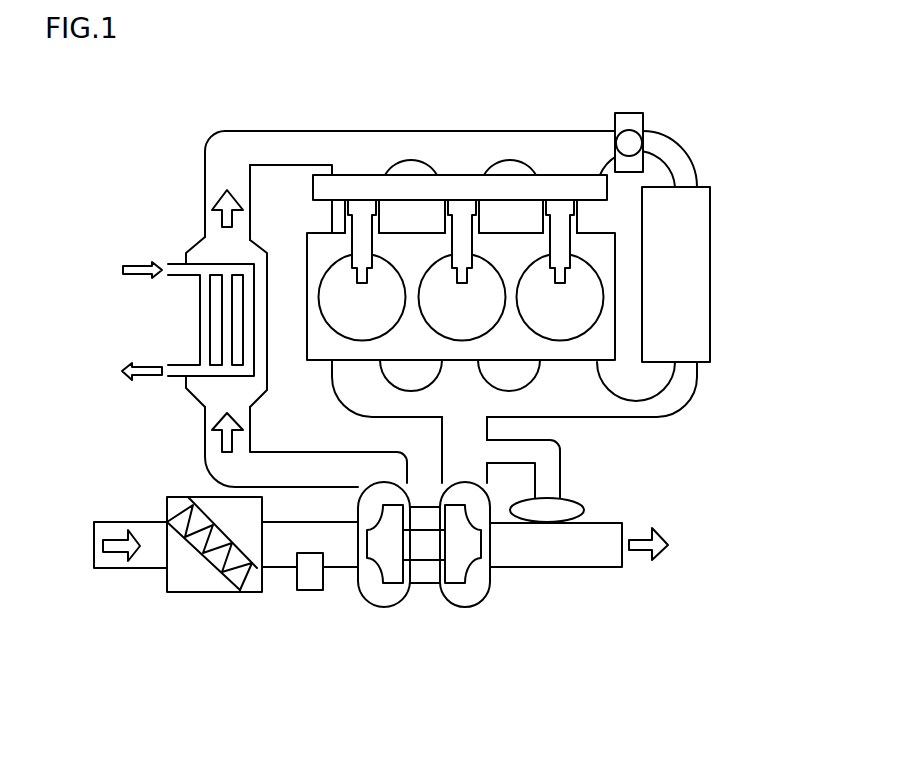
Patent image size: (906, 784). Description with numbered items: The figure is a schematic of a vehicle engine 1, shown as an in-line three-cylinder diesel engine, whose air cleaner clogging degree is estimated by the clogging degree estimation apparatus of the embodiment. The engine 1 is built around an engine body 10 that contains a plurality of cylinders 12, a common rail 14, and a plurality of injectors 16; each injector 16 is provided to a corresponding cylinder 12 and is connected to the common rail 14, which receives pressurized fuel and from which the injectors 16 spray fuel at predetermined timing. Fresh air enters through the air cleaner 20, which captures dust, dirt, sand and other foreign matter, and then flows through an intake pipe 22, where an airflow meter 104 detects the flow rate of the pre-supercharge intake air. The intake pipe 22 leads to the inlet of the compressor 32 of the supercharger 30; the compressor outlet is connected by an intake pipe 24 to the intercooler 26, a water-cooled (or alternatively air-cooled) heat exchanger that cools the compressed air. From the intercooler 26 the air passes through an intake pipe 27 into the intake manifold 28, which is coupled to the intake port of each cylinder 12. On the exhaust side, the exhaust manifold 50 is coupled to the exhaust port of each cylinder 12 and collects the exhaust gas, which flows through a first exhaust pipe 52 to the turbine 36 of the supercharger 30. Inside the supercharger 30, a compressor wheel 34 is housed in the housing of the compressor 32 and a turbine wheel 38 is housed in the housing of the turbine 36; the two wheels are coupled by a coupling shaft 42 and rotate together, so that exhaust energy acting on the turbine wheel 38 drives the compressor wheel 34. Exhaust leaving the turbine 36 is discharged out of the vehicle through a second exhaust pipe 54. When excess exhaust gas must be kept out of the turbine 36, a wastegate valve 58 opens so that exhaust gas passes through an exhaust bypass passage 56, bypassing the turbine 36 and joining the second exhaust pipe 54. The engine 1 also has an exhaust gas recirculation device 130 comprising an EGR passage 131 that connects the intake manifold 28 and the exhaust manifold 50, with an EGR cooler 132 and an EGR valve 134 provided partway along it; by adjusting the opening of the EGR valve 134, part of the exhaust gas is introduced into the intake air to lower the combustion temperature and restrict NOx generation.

The engine 1 is at (760, 41).
The engine body 10 is at (437, 231).
The cylinders 12 is at (333, 328).
The common rail 14 is at (312, 188).
The injectors 16 is at (357, 278).
The air cleaner 20 is at (215, 592).
The intake pipe 22 is at (337, 569).
The intake pipe 24 is at (205, 436).
The intercooler 26 is at (199, 247).
The intake pipe 27 is at (205, 185).
The intake manifold 28 is at (462, 130).
The supercharger 30 is at (436, 585).
The compressor 32 is at (399, 607).
The compressor wheel 34 is at (375, 578).
The turbine 36 is at (449, 607).
The turbine wheel 38 is at (478, 575).
The coupling shaft 42 is at (427, 584).
The exhaust manifold 50 is at (578, 418).
The first exhaust pipe 52 is at (441, 430).
The second exhaust pipe 54 is at (590, 568).
The exhaust bypass passage 56 is at (561, 465).
The wastegate valve 58 is at (584, 511).
The airflow meter 104 is at (302, 592).
The exhaust gas recirculation (EGR) device 130 is at (689, 242).
The EGR passage 131 is at (698, 382).
The EGR cooler 132 is at (711, 231).
The EGR valve 134 is at (629, 113).